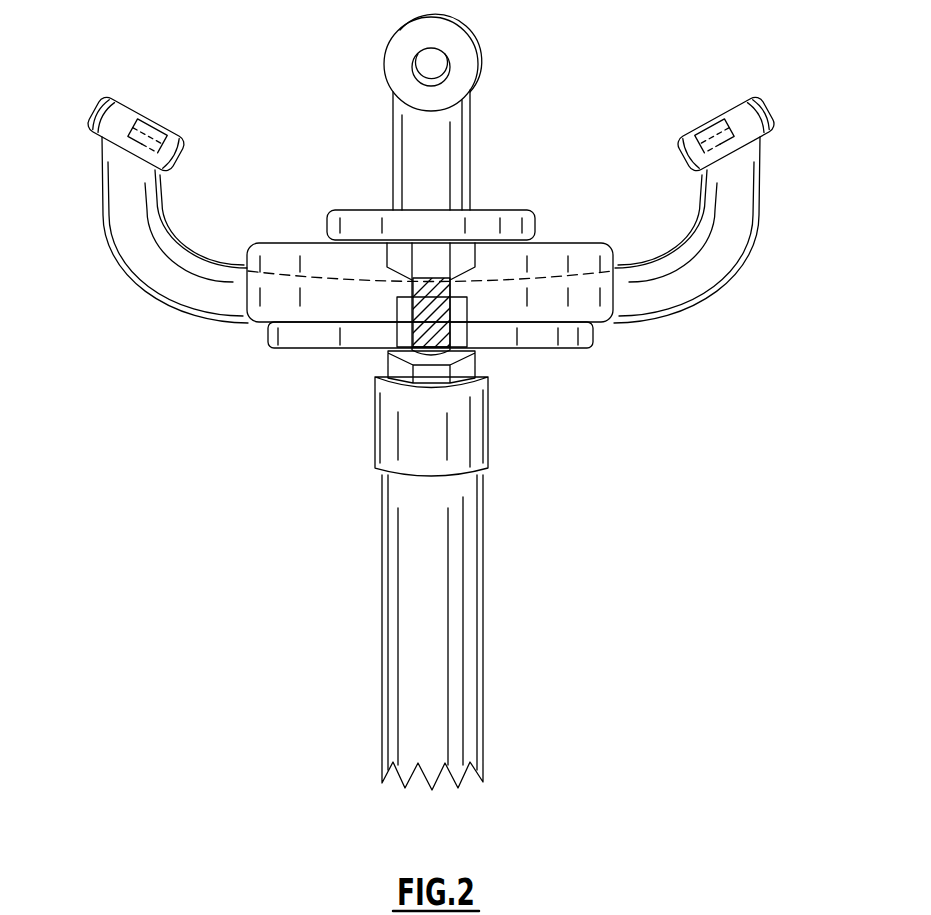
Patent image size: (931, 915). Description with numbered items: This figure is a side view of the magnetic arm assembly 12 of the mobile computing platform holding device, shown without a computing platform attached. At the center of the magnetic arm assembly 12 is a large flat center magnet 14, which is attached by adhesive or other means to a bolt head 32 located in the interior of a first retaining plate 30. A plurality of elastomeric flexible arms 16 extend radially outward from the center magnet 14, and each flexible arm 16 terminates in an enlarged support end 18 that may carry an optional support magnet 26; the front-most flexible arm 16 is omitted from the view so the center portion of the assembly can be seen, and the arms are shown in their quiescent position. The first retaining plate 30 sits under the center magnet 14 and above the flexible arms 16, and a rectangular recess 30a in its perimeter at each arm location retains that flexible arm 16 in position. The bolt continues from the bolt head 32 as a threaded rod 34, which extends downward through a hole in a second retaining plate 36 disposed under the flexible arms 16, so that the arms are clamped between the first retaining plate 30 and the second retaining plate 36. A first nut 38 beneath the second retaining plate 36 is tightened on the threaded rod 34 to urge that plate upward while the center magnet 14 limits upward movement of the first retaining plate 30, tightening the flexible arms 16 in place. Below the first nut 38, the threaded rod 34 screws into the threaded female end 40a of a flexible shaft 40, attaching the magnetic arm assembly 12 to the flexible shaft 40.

The magnetic arm assembly 12 is at (578, 164).
The center magnet 14 is at (477, 227).
The flexible arms 16 is at (403, 133).
The support end 18 is at (465, 63).
The support magnets 26 is at (425, 62).
The first retaining plate 30 is at (308, 252).
The rectangular recess 30a is at (458, 317).
The bolt head 32 is at (465, 255).
The threaded rod 34 is at (412, 312).
The second retaining plate 36 is at (307, 335).
The first nut 38 is at (400, 375).
The flexible shaft 40 is at (468, 690).
The threaded female end 40a is at (477, 445).